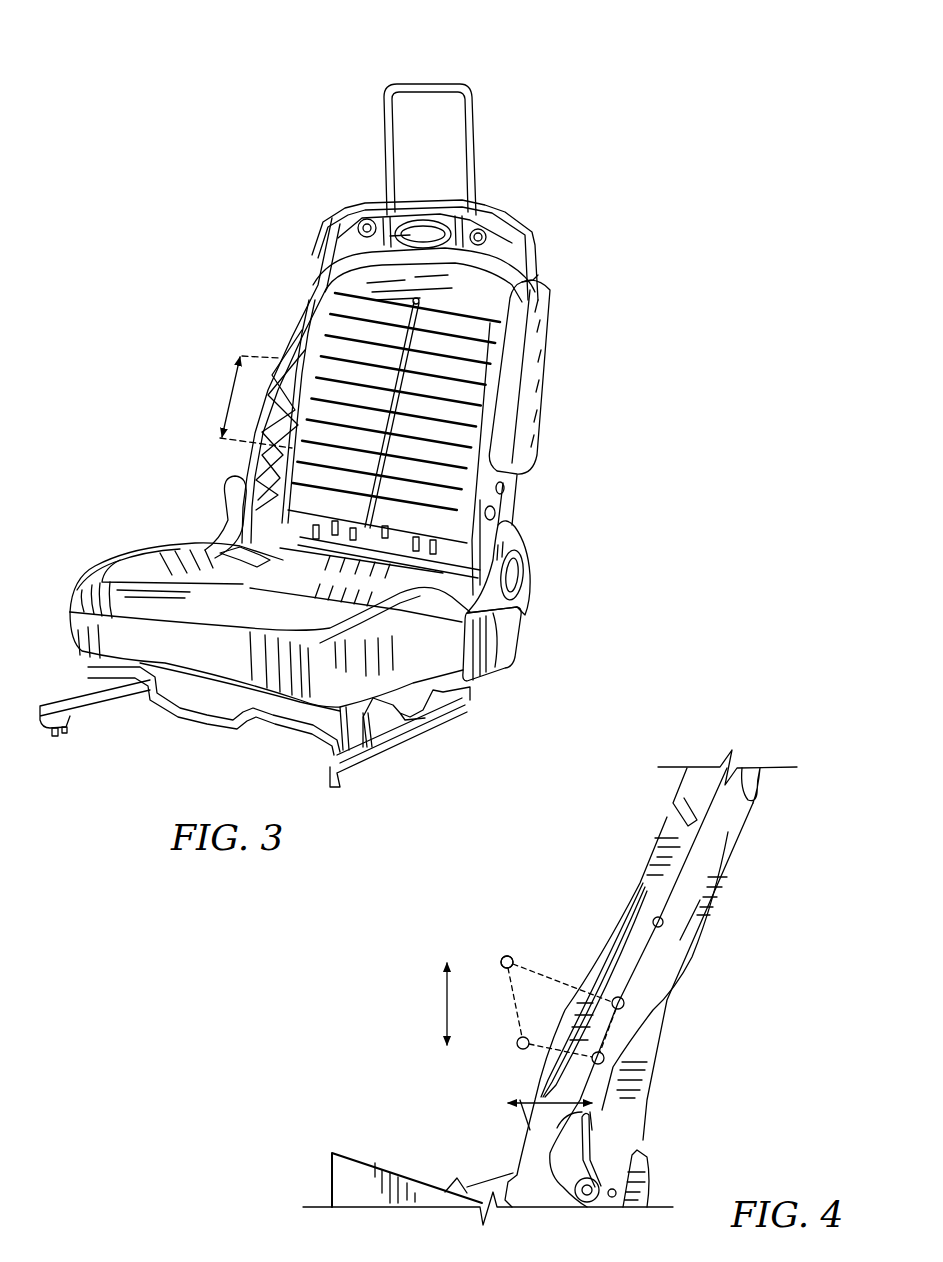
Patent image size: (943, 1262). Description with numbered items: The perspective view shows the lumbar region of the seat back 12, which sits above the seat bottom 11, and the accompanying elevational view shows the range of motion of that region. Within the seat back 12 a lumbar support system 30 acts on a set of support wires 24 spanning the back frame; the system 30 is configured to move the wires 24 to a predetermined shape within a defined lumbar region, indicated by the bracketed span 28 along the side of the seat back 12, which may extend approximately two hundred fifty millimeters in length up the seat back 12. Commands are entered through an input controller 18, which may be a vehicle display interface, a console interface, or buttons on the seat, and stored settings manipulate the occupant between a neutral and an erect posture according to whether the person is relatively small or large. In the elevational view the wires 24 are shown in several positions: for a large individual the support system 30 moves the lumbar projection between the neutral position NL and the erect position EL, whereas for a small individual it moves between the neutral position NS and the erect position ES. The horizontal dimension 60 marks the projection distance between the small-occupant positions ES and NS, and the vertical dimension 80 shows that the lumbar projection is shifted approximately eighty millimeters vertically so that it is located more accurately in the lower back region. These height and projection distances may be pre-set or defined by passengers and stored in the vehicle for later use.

In FIG. 4, the seat bottom 11 is at (375, 1155).
In FIG. 3, the seat back 12 is at (486, 234).
In FIG. 4, the seat back 12 is at (557, 822).
In FIG. 3, the input controller 18 is at (450, 327).
In FIG. 3, the support wires 24 is at (357, 360).
In FIG. 3, the lumbar region 28 is at (235, 397).
In FIG. 3, the lumbar support system 30 is at (465, 377).
In FIG. 4, the lumbar support system 30 is at (517, 887).
In FIG. 4, the horizontal displacement 60 is at (548, 1089).
In FIG. 4, the vertical shift of the lumbar projection 80 is at (466, 1004).
In FIG. 4, the erect position for a large individual EL is at (507, 956).
In FIG. 4, the erect position for a small individual ES is at (516, 1113).
In FIG. 4, the neutral position for a large individual NL is at (640, 962).
In FIG. 4, the neutral position for a small individual NS is at (594, 1114).